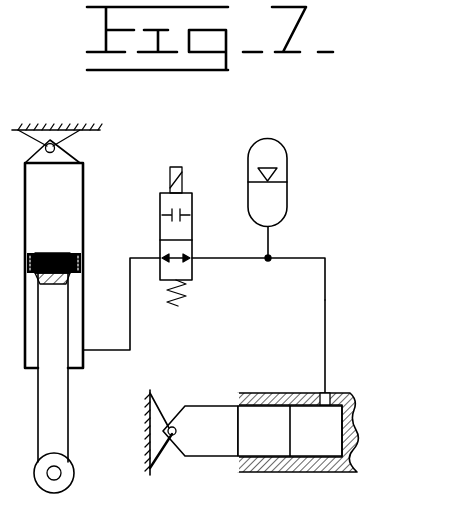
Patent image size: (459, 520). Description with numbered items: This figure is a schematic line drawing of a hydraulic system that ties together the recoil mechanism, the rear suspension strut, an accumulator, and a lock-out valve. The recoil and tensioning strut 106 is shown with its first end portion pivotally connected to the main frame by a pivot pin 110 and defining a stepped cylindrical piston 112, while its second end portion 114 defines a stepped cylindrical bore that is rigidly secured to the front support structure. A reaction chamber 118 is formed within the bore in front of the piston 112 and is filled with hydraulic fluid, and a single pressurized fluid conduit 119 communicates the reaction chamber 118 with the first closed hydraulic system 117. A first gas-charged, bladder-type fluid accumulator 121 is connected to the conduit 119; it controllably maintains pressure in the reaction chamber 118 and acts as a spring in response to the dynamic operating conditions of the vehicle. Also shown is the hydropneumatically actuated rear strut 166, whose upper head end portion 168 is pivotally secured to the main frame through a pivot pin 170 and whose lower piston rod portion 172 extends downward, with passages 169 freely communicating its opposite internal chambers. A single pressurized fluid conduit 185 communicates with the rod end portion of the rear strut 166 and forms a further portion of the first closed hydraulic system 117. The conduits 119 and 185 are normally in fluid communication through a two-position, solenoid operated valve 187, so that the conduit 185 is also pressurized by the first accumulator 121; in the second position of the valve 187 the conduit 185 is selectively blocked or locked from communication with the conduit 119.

The recoil and tensioning strut 106 is at (348, 392).
The pivot pin 110 is at (180, 458).
The stepped cylindrical piston 112 is at (250, 449).
The second end portion 114 is at (283, 396).
The first closed hydraulic system 117 is at (330, 268).
The reaction chamber 118 is at (333, 449).
The pressurized fluid conduit 119 is at (327, 337).
The first gas-charged fluid accumulator 121 is at (290, 153).
The rear strut 166 is at (88, 168).
The upper head end portion 168 is at (86, 215).
The passages 169 is at (68, 250).
The pivot pin 170 is at (80, 125).
The lower piston rod portion 172 is at (55, 395).
The pressurized fluid conduit 185 is at (133, 330).
The two-position solenoid operated valve 187 is at (158, 233).